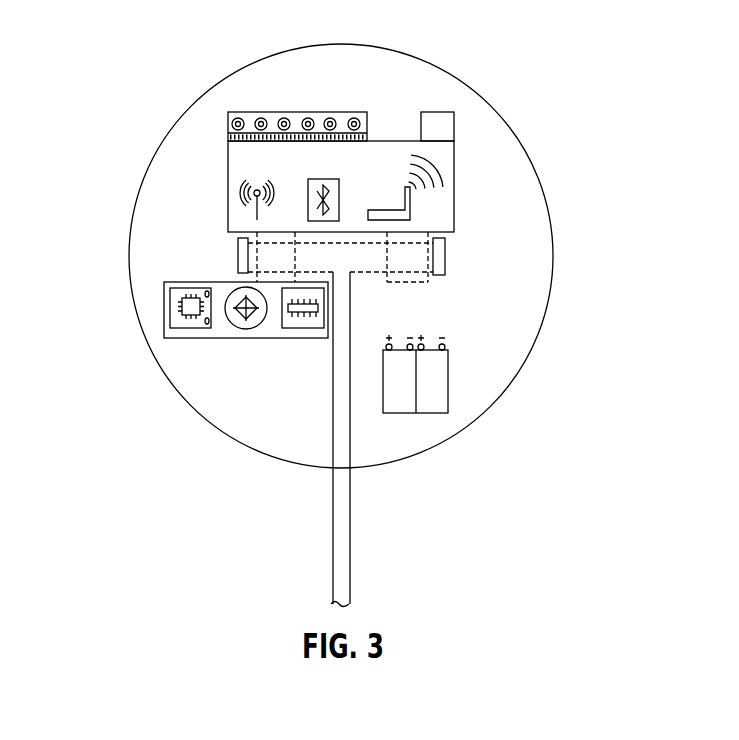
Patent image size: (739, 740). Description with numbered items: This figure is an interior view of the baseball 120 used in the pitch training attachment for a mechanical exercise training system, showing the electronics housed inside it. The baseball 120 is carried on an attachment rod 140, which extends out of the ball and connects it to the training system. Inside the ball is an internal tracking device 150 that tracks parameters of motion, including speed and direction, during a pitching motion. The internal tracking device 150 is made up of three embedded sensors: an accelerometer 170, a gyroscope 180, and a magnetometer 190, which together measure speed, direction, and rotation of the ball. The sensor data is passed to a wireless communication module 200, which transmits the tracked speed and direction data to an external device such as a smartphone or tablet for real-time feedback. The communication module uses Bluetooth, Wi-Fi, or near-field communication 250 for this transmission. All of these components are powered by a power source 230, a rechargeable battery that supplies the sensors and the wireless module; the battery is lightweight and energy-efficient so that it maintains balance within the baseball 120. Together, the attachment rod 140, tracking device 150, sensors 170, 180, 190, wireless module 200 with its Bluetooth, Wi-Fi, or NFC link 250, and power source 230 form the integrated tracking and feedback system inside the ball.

The baseball 120 is at (417, 60).
The attachment rod 140 is at (333, 540).
The internal tracking device 150 is at (190, 327).
The accelerometer 170 is at (168, 307).
The gyroscope 180 is at (243, 287).
The magnetometer 190 is at (300, 329).
The wireless communication module 200 is at (454, 128).
The power source 230 is at (293, 111).
The Bluetooth, Wi-Fi, or near-field communication (NFC) 250 is at (455, 187).